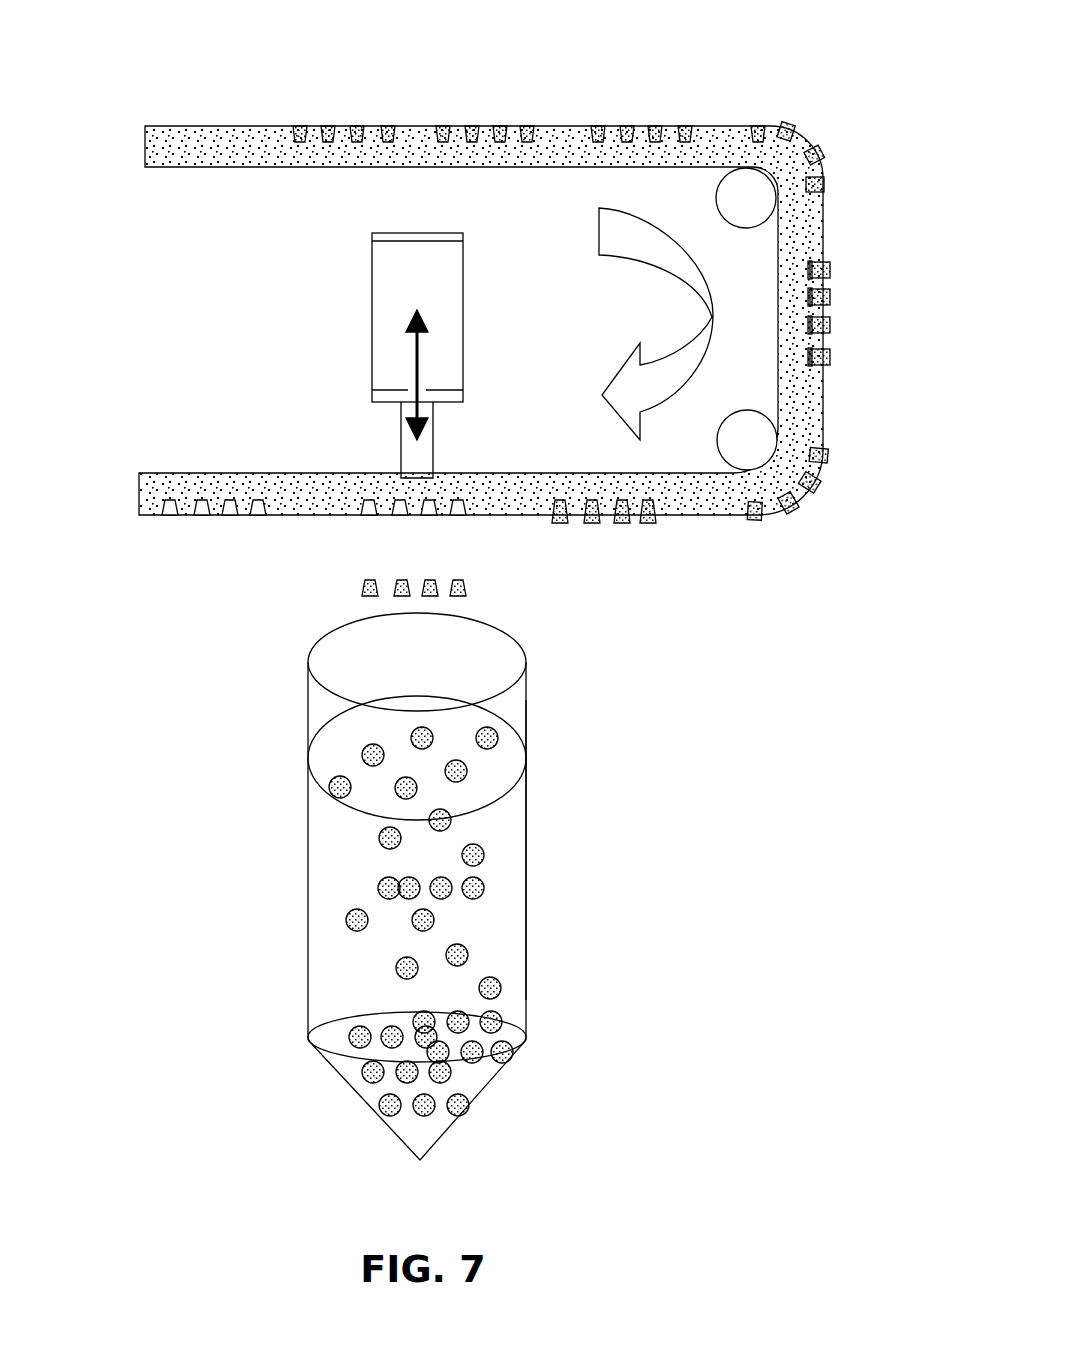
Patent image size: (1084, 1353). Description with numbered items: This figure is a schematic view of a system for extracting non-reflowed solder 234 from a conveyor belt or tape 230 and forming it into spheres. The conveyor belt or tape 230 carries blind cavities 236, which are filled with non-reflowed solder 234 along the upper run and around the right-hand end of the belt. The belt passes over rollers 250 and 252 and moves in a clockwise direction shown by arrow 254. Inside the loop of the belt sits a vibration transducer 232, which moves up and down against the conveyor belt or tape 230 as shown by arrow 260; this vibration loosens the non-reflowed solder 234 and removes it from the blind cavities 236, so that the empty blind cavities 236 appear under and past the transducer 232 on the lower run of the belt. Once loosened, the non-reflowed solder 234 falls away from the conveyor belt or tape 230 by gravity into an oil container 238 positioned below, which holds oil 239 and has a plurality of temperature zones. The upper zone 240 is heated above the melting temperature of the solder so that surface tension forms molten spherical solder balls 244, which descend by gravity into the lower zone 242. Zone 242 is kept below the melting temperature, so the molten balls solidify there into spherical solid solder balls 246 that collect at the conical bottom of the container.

The conveyor belt or tape 230 is at (565, 126).
The vibration transducer 232 is at (372, 262).
The non-reflowed solder 234 is at (527, 126).
The blind cavities 236 is at (400, 500).
The oil container 238 is at (527, 878).
The oil 239 is at (325, 845).
The temperature zone 240 is at (527, 698).
The temperature zone 242 is at (527, 838).
The molten spherical solder balls 244 is at (440, 832).
The spherical solid solder balls 246 is at (420, 888).
The roller 250 is at (732, 190).
The roller 252 is at (755, 435).
The arrow 254 is at (680, 345).
The arrow 260 is at (417, 348).